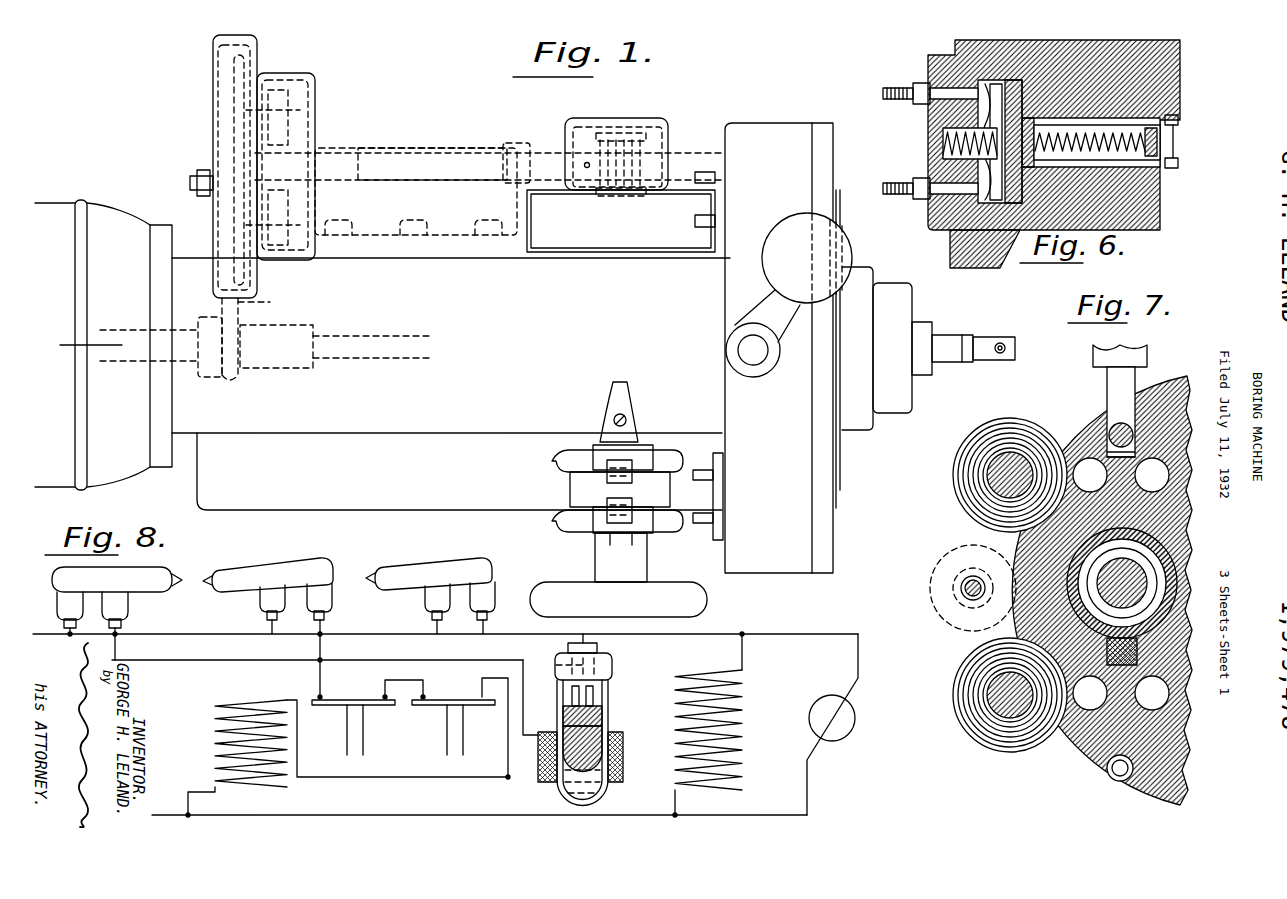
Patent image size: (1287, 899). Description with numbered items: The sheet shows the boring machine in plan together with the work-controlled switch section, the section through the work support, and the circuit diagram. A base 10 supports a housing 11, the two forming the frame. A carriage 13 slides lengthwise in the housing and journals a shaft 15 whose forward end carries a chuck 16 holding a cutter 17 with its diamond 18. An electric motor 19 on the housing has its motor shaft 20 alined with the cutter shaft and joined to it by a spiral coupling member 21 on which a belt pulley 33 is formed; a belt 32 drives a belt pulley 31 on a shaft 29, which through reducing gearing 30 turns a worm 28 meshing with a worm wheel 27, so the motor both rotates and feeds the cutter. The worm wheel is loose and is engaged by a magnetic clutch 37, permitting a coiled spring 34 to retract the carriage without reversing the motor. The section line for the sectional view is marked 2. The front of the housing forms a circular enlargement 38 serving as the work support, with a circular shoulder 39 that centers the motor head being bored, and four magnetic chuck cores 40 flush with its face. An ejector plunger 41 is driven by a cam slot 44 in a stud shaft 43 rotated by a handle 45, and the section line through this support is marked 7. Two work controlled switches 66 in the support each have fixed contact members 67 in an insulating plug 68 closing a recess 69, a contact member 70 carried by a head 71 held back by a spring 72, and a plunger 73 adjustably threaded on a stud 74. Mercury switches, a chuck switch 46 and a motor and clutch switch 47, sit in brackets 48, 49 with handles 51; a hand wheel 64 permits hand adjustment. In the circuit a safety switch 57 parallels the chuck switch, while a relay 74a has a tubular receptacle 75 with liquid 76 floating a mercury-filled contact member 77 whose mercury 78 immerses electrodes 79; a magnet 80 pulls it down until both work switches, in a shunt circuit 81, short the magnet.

In FIG. 1, the section line 2 is at (81, 346).
In FIG. 1, the column 7 is at (768, 140).
In FIG. 1, the base 10 is at (459, 471).
In FIG. 1, the housing 11 is at (400, 418).
In FIG. 7, the reciprocatory boring member or carriage 13 is at (1112, 555).
In FIG. 1, the shaft 15 is at (368, 335).
In FIG. 7, the shaft 15 is at (1073, 552).
In FIG. 1, the chuck 16 is at (953, 362).
In FIG. 1, the cutter 17 is at (982, 345).
In FIG. 1, the diamond 18 is at (1002, 343).
In FIG. 1, the electric motor 19 is at (103, 345).
In FIG. 8, the electric motor 19 is at (832, 718).
In FIG. 1, the motor shaft 20 is at (113, 332).
In FIG. 1, the coupling member 21 is at (305, 368).
In FIG. 1, the worm wheel 27 is at (529, 163).
In FIG. 1, the worm 28 is at (626, 190).
In FIG. 1, the shaft 29 is at (416, 191).
In FIG. 1, the reducing gearing 30 is at (300, 100).
In FIG. 1, the belt pulley 31 is at (218, 90).
In FIG. 1, the belt 32 is at (267, 301).
In FIG. 1, the belt pulley 33 is at (238, 376).
In FIG. 7, the coiled spring 34 is at (1110, 775).
In FIG. 1, the magnetic clutch 37 is at (621, 221).
In FIG. 8, the magnetic clutch 37 is at (735, 712).
In FIG. 1, the circular enlargement 38 is at (800, 234).
In FIG. 6, the circular enlargement 38 is at (1091, 169).
In FIG. 7, the circular enlargement 38 is at (1015, 405).
In FIG. 1, the circular shoulder 39 is at (838, 210).
In FIG. 6, the circular shoulder 39 is at (1176, 124).
In FIG. 7, the armature or core 40 is at (995, 475).
In FIG. 8, the armature or core 40 is at (232, 703).
In FIG. 7, the plunger 41 is at (1129, 425).
In FIG. 1, the stud shaft 43 is at (755, 355).
In FIG. 7, the stud shaft 43 is at (1121, 412).
In FIG. 7, the cam slot 44 is at (1107, 450).
In FIG. 1, the handle 45 is at (772, 290).
In FIG. 7, the handle 45 is at (1140, 352).
In FIG. 1, the switch 46 is at (570, 465).
In FIG. 8, the switch 46 is at (252, 573).
In FIG. 1, the switch 47 is at (580, 524).
In FIG. 8, the switch 47 is at (420, 573).
In FIG. 1, the bracket 48 is at (650, 447).
In FIG. 1, the bracket 49 is at (650, 530).
In FIG. 1, the handle 51 is at (634, 488).
In FIG. 8, the safety switch 57 is at (132, 585).
In FIG. 1, the hand wheel 64 is at (618, 565).
In FIG. 1, the work controlled switches 66 is at (718, 205).
In FIG. 6, the work controlled switches 66 is at (903, 128).
In FIG. 7, the work controlled switches 66 is at (905, 555).
In FIG. 8, the work controlled switches 66 is at (337, 700).
In FIG. 6, the fixed contact members 67 is at (930, 141).
In FIG. 6, the plug of insulating material 68 is at (935, 228).
In FIG. 6, the recess 69 is at (990, 205).
In FIG. 6, the contact member 70 is at (990, 90).
In FIG. 6, the supporting member or head 71 is at (1010, 95).
In FIG. 6, the spring 72 is at (945, 140).
In FIG. 6, the plunger 73 is at (1108, 128).
In FIG. 7, the plunger 73 is at (960, 600).
In FIG. 6, the stud 74 is at (1098, 155).
In FIG. 7, the stud 74 is at (966, 598).
In FIG. 8, the relay 74a is at (618, 660).
In FIG. 8, the tubular receptacle 75 is at (605, 716).
In FIG. 8, the liquid 76 is at (600, 788).
In FIG. 8, the contact member 77 is at (558, 712).
In FIG. 8, the mercury 78 is at (605, 692).
In FIG. 8, the electrodes 79 is at (555, 665).
In FIG. 8, the magnet 80 is at (623, 762).
In FIG. 8, the shunt circuit 81 is at (508, 725).